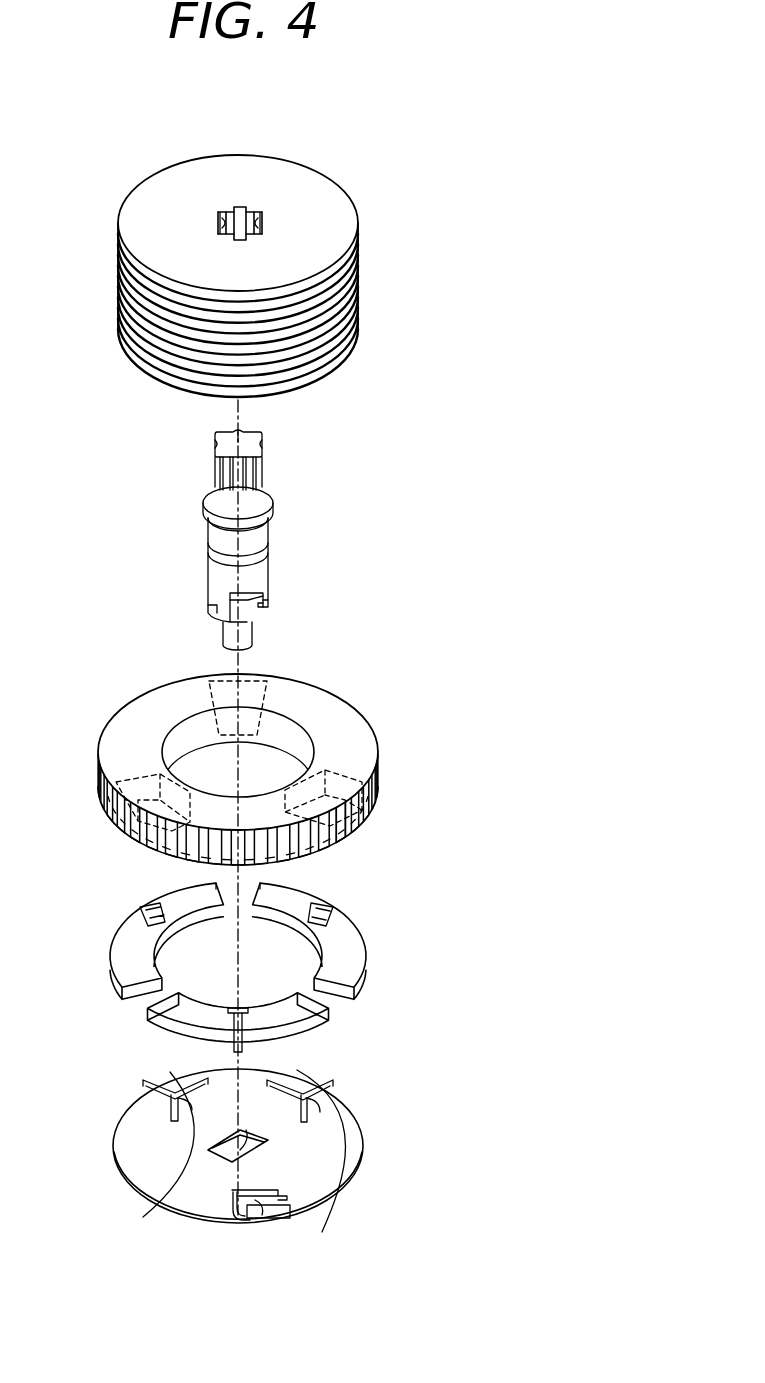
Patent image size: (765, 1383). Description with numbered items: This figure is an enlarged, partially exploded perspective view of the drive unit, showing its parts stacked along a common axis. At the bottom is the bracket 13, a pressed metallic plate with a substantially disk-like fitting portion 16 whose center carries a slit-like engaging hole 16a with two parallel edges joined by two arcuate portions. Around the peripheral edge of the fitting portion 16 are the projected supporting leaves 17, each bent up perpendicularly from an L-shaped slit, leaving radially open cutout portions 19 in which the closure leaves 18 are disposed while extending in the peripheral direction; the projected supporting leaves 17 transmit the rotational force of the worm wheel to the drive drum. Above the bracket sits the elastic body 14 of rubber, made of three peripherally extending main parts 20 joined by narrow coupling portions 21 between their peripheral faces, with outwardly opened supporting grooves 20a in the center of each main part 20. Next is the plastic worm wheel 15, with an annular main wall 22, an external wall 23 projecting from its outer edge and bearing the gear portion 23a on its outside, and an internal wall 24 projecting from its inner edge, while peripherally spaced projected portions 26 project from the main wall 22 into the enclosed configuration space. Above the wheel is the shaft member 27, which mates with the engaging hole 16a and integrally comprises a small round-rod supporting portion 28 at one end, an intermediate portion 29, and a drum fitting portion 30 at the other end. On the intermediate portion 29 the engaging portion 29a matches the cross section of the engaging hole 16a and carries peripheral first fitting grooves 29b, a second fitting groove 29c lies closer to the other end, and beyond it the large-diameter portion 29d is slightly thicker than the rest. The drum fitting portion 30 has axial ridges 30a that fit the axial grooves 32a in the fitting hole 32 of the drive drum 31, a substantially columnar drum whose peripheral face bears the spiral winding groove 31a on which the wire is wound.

The bracket 13 is at (249, 1153).
The elastic body 14 is at (240, 958).
The worm wheel 15 is at (250, 759).
The fitting portion 16 is at (353, 1166).
The engaging hole 16a is at (265, 1146).
The projected supporting leaves 17 is at (143, 1094).
The closure leaves 18 is at (165, 1088).
The cutout portions 19 is at (320, 1140).
The main parts 20 is at (160, 906).
The supporting grooves 20a is at (336, 906).
The coupling portions 21 is at (226, 884).
The main wall 22 is at (355, 712).
The external wall 23 is at (269, 810).
The gear portion 23a is at (355, 828).
The internal wall 24 is at (180, 745).
The projected portions 26 is at (300, 690).
The shaft member 27 is at (246, 527).
The supporting portion 28 is at (255, 638).
The intermediate portion 29 is at (248, 560).
The engaging portion 29a is at (252, 612).
The first fitting grooves 29b is at (266, 603).
The second fitting groove 29c is at (218, 561).
The large-diameter portion 29d is at (218, 533).
The drum fitting portion 30 is at (242, 449).
The ridges 30a is at (222, 470).
The drive drum 31 is at (258, 244).
The winding groove 31a is at (350, 300).
The fitting hole 32 is at (231, 165).
The grooves 32a is at (229, 205).